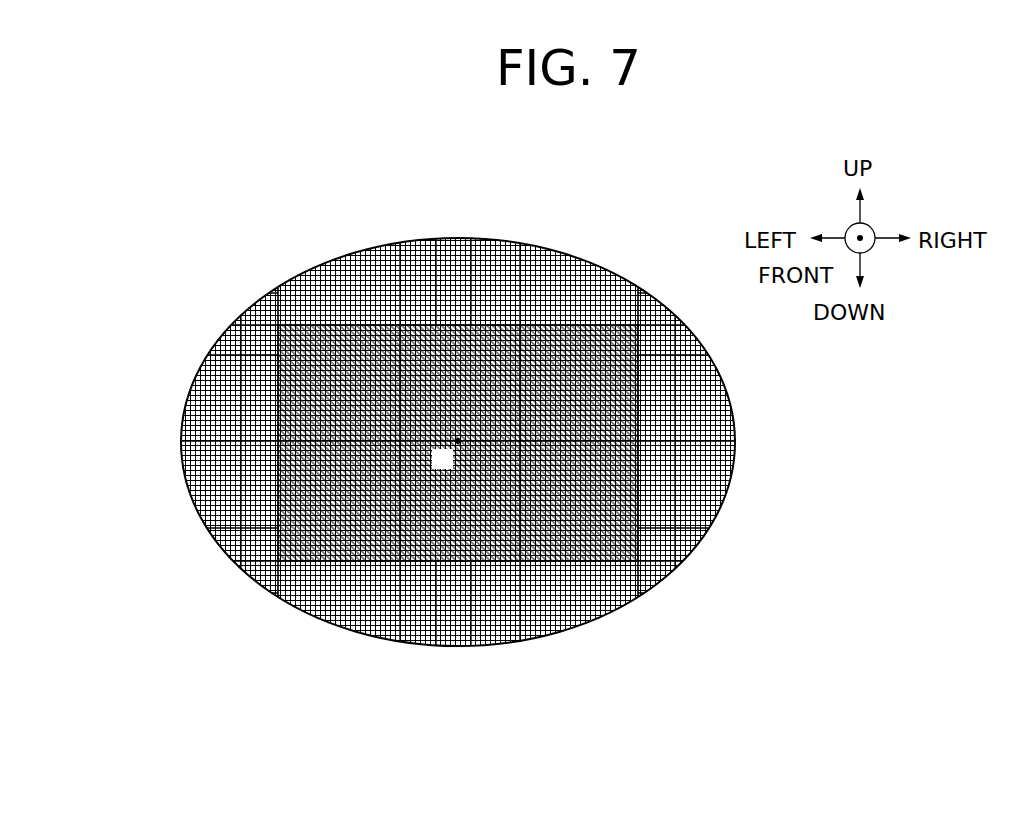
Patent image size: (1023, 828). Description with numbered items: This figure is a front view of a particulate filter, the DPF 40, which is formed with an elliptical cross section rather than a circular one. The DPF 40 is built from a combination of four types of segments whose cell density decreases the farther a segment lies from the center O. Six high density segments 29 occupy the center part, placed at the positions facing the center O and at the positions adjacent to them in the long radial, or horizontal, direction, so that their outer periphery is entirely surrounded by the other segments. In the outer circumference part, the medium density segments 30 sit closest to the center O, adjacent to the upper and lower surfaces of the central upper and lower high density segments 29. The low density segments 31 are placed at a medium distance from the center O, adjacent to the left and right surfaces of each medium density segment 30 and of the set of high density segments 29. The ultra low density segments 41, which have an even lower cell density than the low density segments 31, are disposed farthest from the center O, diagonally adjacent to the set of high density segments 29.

The high density segment 29 is at (343, 389).
The medium density segment 30 is at (468, 230).
The low density segment 31 is at (344, 240).
The DPF 40 is at (305, 240).
The ultra low density segment 41 is at (252, 292).